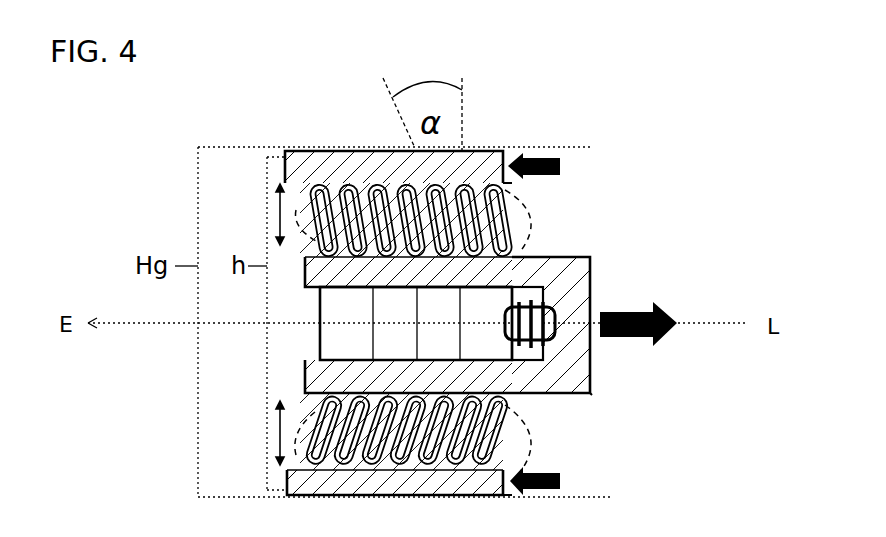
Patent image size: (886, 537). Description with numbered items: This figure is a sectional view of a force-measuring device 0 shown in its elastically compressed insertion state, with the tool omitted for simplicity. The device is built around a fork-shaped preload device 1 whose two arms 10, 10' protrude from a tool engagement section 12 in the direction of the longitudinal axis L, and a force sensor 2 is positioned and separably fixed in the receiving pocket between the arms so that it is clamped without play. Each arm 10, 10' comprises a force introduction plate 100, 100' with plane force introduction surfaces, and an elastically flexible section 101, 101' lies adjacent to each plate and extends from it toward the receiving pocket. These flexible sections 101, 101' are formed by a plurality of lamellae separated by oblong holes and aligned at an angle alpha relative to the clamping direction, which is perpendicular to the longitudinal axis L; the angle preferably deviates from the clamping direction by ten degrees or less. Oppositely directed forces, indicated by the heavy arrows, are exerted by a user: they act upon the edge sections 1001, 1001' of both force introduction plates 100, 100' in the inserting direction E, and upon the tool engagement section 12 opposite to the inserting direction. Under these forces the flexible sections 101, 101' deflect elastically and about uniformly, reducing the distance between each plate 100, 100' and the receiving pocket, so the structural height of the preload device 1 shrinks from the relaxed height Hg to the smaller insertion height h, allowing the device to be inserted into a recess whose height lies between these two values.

The force-measuring device 0 is at (690, 103).
The preload device 1 is at (616, 245).
The force sensor 2 is at (540, 305).
The arm 10 is at (308, 196).
The arm 10' is at (308, 433).
The tool engagement section 12 is at (593, 400).
The force introduction plate 100 is at (298, 196).
The force introduction plate 100' is at (298, 433).
The elastically flexible section 101 is at (308, 220).
The elastically flexible section 101' is at (308, 418).
The edge section 1001 is at (659, 152).
The edge section 1001' is at (662, 498).